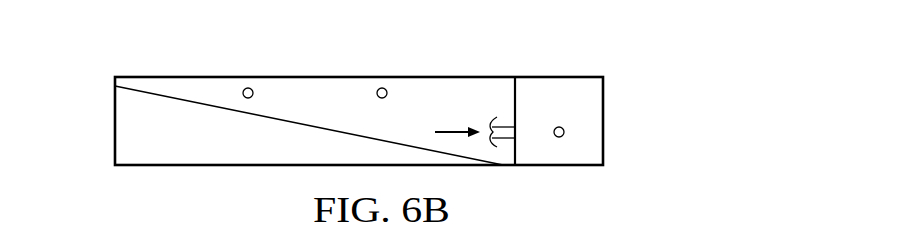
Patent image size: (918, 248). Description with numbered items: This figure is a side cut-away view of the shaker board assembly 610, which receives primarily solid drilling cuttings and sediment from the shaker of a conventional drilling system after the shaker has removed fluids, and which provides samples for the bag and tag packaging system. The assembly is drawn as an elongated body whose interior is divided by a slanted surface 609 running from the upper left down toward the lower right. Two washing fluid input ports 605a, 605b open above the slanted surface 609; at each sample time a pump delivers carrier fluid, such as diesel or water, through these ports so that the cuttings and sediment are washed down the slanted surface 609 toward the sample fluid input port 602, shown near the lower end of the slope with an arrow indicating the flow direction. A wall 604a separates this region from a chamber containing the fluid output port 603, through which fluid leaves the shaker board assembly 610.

The shaker board assembly 610 is at (114, 96).
The slanted surface 609 is at (183, 100).
The washing fluid input port 605a is at (248, 88).
The washing fluid input port 605b is at (382, 88).
The partition wall 604a is at (515, 97).
The sample fluid input port 602 is at (505, 122).
The fluid output port 603 is at (559, 137).